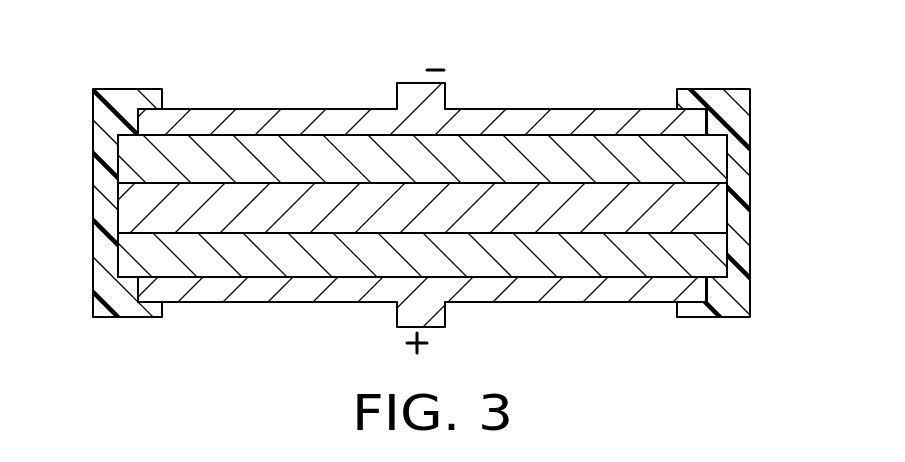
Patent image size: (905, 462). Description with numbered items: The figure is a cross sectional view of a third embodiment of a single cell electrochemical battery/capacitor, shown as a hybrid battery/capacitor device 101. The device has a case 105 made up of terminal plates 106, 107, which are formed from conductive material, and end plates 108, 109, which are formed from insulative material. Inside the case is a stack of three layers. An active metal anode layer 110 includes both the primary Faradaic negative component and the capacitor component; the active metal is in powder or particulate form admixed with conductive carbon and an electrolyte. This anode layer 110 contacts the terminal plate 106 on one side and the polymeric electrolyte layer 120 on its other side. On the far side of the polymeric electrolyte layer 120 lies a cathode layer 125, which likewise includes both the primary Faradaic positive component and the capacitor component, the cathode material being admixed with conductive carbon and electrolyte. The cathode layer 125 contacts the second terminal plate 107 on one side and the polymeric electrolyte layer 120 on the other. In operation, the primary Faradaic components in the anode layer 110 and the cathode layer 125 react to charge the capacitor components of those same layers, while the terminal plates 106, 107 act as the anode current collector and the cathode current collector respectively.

The hybrid battery/capacitor device 101 is at (433, 192).
The case 105 is at (433, 200).
The terminal plate 106 is at (264, 117).
The terminal plate 107 is at (212, 295).
The end plate 108 is at (738, 230).
The end plate 109 is at (93, 232).
The active metal anode layer 110 is at (357, 148).
The polymeric electrolyte layer 120 is at (590, 222).
The cathode layer 125 is at (301, 265).